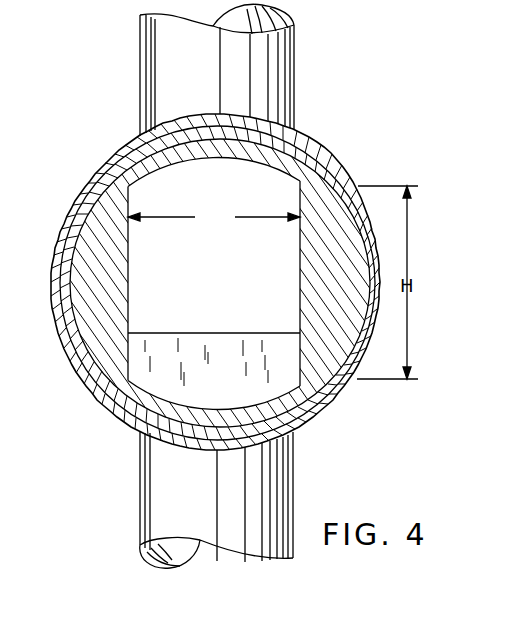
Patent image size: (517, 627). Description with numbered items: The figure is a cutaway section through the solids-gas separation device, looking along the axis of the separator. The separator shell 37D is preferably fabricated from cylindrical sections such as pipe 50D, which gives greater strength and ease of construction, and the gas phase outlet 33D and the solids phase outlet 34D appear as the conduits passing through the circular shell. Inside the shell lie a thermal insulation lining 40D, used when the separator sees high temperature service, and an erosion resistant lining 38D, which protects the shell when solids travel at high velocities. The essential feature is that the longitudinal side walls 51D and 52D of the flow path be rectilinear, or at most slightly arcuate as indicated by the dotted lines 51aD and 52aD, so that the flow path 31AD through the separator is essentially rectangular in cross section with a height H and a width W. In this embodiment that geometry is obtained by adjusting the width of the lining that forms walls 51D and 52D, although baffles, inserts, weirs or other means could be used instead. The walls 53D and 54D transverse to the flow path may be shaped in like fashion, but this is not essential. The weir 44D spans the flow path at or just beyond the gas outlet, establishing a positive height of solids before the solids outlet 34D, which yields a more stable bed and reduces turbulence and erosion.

The gas phase outlet 33D is at (162, 35).
The solids phase outlet 34D is at (163, 498).
The pipe 50D is at (317, 142).
The separator shell 37D is at (130, 137).
The thermal insulation lining 40D is at (104, 163).
The erosion resistant lining 38D is at (90, 204).
The transverse wall 53D is at (186, 158).
The transverse wall 54D is at (172, 398).
The longitudinal side wall 51D is at (128, 272).
The slightly arcuate side wall 51aD is at (128, 300).
The longitudinal side wall 52D is at (300, 272).
The slightly arcuate side wall 52aD is at (308, 296).
The weir 44D is at (165, 334).
The flow path 31AD is at (242, 250).